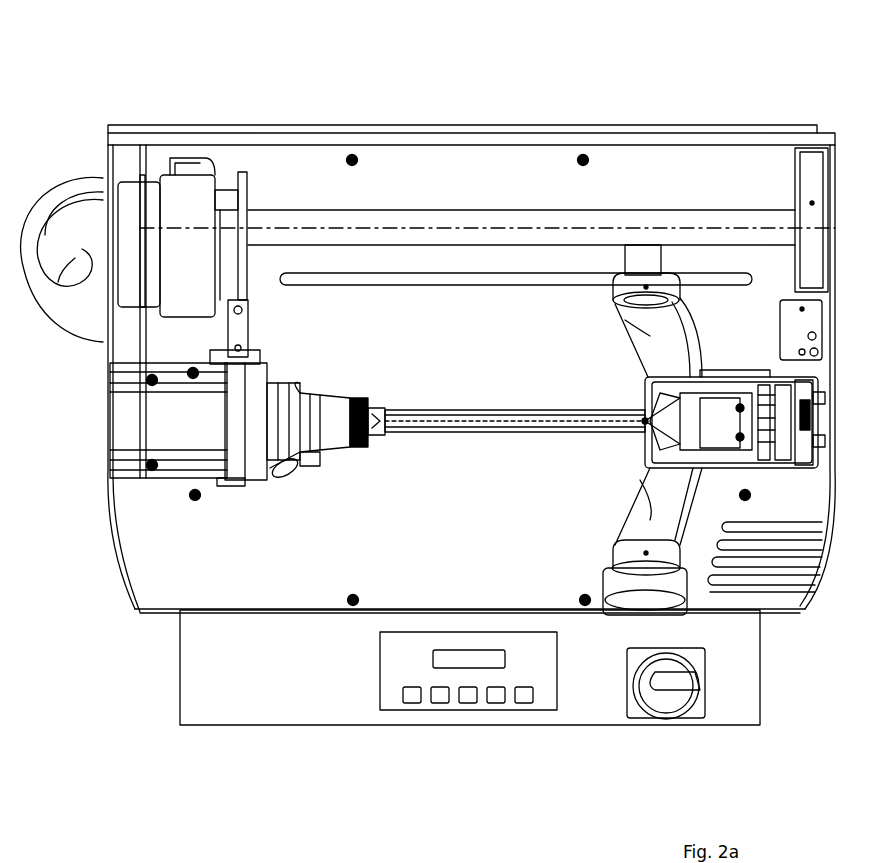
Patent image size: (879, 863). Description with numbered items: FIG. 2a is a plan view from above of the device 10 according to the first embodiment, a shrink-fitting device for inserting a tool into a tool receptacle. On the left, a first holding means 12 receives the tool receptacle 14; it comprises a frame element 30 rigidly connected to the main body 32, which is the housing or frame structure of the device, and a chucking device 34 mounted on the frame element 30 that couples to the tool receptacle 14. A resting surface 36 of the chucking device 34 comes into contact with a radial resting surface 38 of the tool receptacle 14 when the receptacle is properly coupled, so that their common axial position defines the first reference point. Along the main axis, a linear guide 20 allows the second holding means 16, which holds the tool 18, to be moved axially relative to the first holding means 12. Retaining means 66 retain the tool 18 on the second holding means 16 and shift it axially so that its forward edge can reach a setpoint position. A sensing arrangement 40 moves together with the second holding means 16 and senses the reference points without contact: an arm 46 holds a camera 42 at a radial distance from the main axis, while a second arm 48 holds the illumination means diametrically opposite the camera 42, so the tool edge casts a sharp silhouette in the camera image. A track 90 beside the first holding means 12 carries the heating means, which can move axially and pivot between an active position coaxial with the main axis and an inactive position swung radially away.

The device 10 is at (100, 64).
The first holding means 12 is at (226, 494).
The tool receptacle 14 is at (343, 397).
The second holding means 16 is at (722, 352).
The tool 18 is at (630, 415).
The linear guide 20 is at (455, 412).
The frame element 30 is at (256, 468).
The main body 32 is at (152, 600).
The chucking device 34 is at (310, 455).
The resting surface 36 is at (366, 405).
The radial resting surface 38 is at (333, 417).
The sensing arrangement 40 is at (600, 538).
The camera 42 is at (615, 558).
The arm 46 is at (650, 512).
The second arm 48 is at (650, 345).
The retaining means 66 is at (650, 400).
The track 90 is at (172, 440).